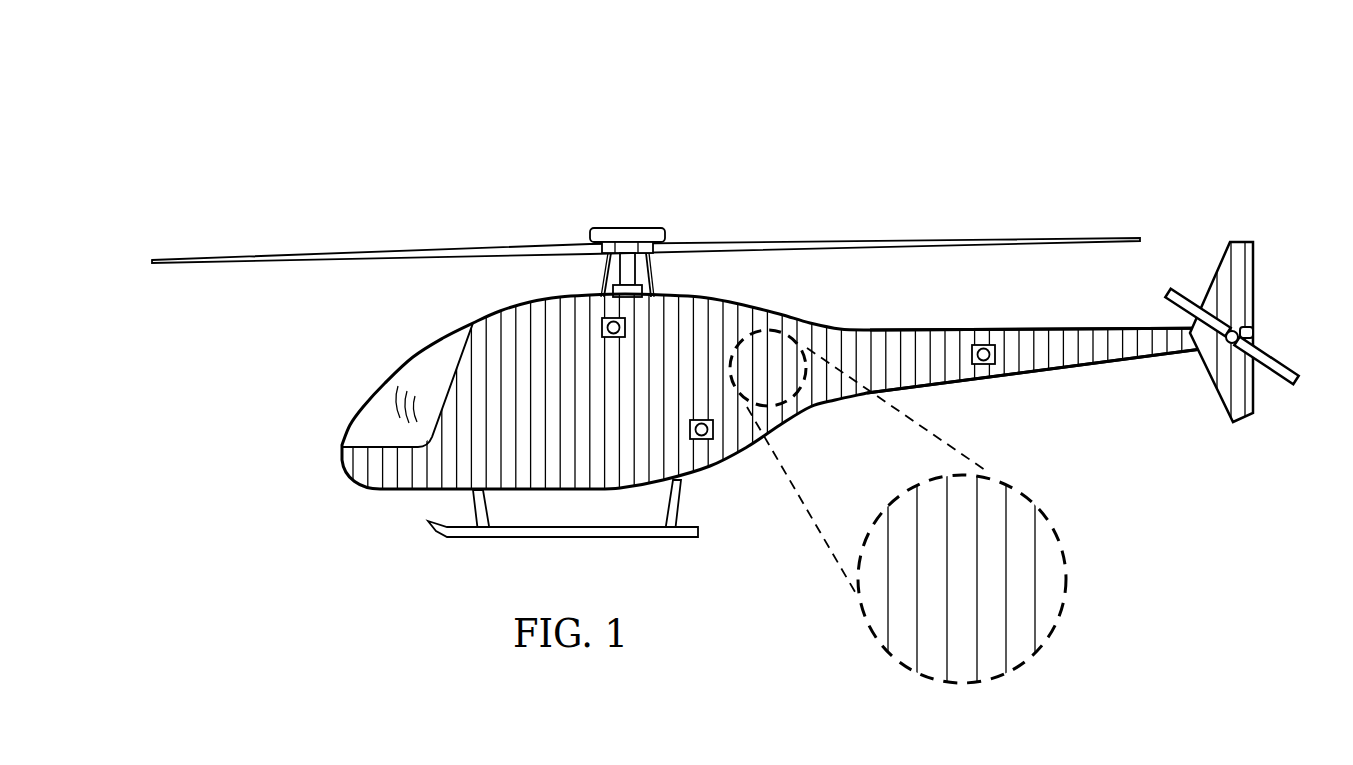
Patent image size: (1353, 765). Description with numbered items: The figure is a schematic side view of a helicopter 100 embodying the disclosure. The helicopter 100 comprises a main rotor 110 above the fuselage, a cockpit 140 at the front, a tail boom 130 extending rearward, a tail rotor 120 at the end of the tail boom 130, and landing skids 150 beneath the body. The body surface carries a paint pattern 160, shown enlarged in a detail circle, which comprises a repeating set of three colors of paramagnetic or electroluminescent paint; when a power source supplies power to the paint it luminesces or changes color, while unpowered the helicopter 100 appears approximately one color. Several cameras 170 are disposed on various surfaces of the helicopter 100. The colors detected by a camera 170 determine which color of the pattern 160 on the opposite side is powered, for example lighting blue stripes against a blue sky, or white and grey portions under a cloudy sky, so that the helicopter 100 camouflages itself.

The helicopter 100 is at (347, 114).
The rotor 110 is at (359, 251).
The tail rotor 120 is at (1300, 334).
The tail boom 130 is at (1073, 328).
The cockpit 140 is at (378, 492).
The landing skids 150 is at (572, 539).
The paint pattern 160 is at (1088, 607).
The cameras 170 is at (602, 328).